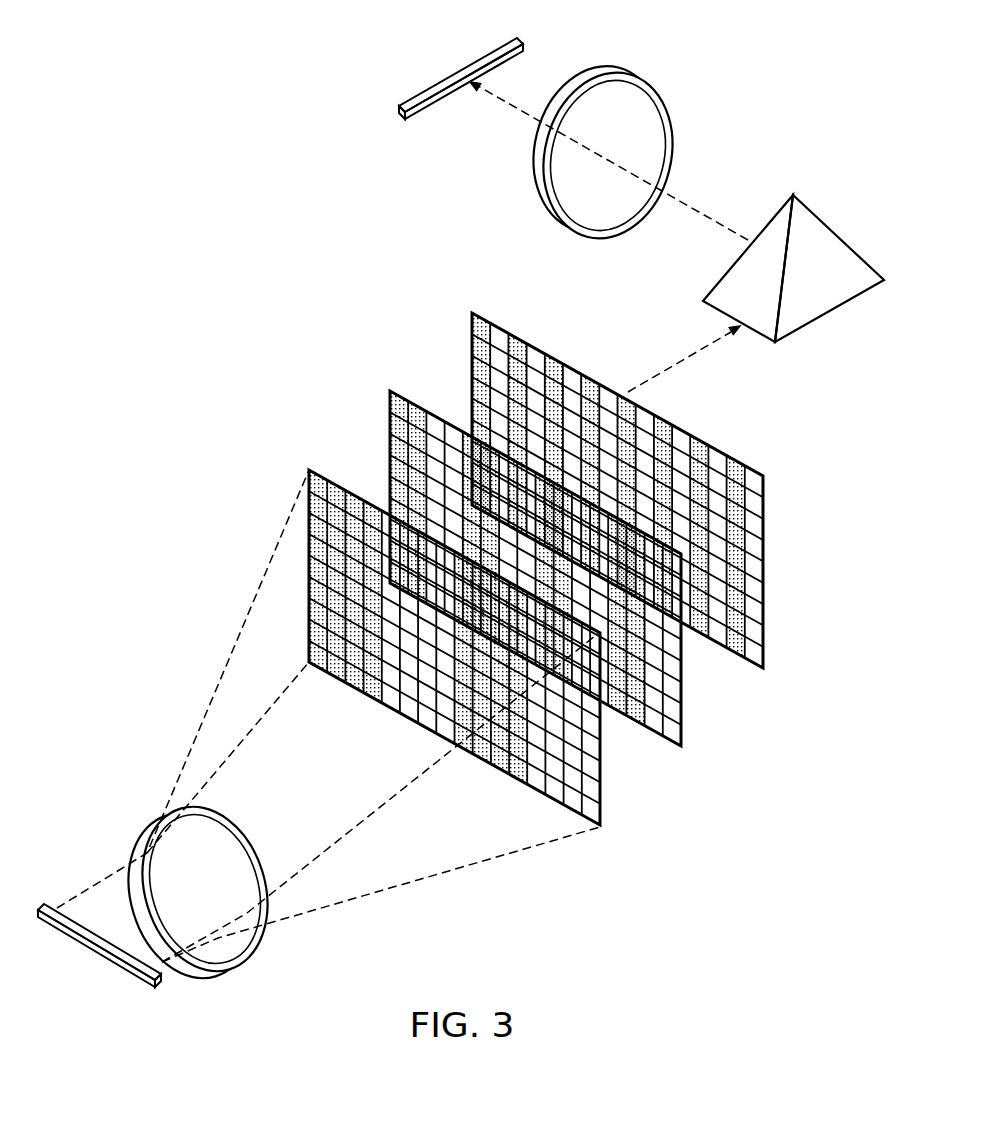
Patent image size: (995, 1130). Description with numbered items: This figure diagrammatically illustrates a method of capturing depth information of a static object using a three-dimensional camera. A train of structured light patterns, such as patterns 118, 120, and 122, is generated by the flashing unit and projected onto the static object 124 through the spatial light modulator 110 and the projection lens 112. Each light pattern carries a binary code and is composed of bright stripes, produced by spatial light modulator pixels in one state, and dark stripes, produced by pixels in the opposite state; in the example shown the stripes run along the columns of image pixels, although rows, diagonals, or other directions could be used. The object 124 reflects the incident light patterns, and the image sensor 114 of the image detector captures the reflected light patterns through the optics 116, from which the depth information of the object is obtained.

The spatial light modulator 110 is at (97, 955).
The projection lens 112 is at (247, 815).
The image sensor 114 is at (477, 57).
The optics 116 is at (647, 70).
The structured light pattern 118 is at (763, 578).
The structured light pattern 120 is at (682, 697).
The structured light pattern 122 is at (600, 793).
The static object 124 is at (837, 201).